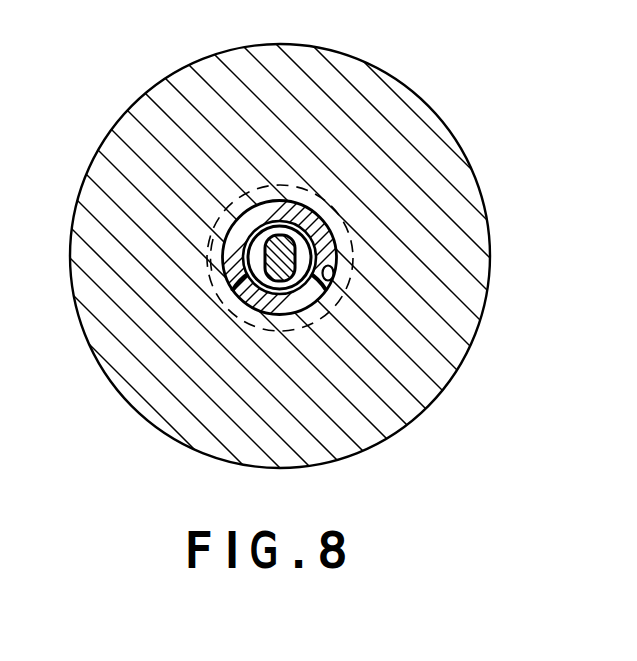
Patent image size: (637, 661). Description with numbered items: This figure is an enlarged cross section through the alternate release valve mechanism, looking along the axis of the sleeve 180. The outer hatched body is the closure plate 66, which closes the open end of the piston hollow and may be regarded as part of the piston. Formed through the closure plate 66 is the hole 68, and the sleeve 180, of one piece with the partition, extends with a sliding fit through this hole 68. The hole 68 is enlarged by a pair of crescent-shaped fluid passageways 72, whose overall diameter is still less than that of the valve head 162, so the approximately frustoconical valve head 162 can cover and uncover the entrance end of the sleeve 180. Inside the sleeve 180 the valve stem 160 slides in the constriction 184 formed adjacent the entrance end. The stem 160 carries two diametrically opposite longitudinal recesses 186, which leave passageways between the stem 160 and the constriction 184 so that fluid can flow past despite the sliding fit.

The closure plate 66 is at (452, 154).
The hole 68 is at (336, 279).
The fluid passageways 72 is at (290, 188).
The valve stem 160 is at (308, 204).
The valve head 162 is at (208, 246).
The sleeve 180 is at (242, 302).
The constriction 184 is at (306, 312).
The longitudinal recesses 186 is at (248, 260).